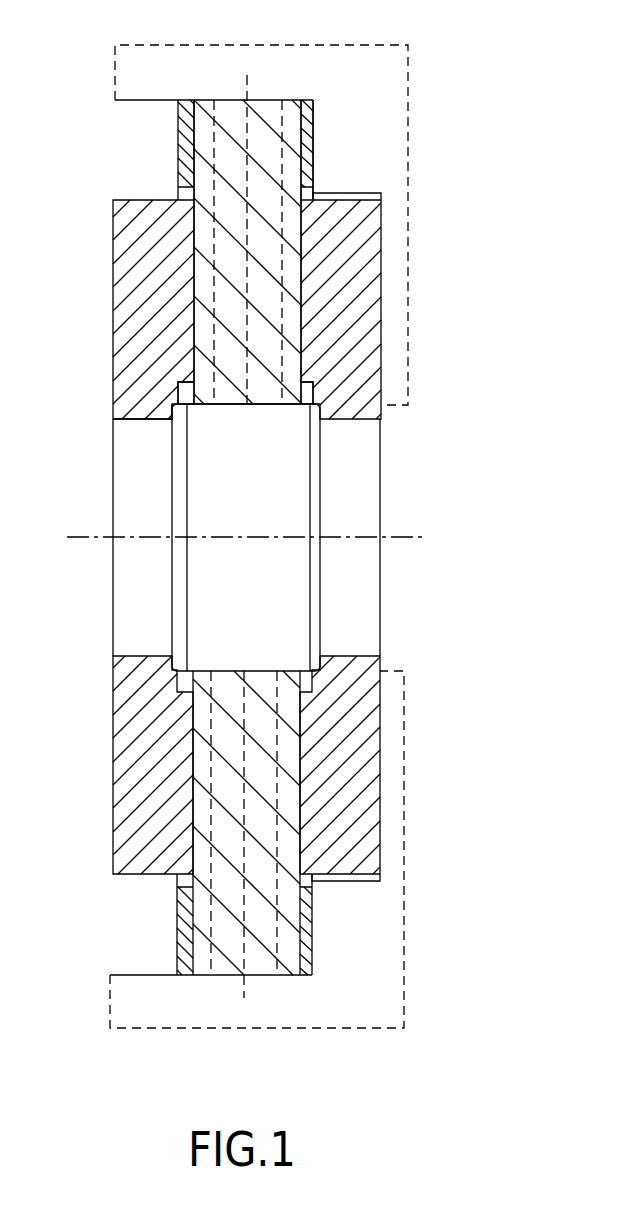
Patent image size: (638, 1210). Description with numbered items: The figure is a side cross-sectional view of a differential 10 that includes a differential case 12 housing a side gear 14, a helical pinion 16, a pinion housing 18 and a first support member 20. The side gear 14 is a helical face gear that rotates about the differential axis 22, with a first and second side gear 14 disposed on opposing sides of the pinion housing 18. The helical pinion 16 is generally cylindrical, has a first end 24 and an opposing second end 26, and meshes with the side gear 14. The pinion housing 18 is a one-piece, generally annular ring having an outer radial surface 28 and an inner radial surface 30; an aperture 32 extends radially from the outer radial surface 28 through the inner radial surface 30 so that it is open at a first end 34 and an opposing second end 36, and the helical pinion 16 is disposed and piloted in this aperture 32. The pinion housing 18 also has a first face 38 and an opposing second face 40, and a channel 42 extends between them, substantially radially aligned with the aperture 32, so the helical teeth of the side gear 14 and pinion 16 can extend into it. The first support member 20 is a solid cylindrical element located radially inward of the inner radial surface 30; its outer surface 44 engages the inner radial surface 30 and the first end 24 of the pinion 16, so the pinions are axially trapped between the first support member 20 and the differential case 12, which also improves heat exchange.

The differential 10 is at (466, 202).
The differential case 12 is at (388, 986).
The side gear 14 is at (372, 386).
The helical pinion 16 is at (222, 183).
The pinion housing 18 is at (313, 117).
The first support member 20 is at (203, 477).
The differential axis 22 is at (402, 538).
The first end 24 is at (282, 404).
The second end 26 is at (288, 100).
The outer radial surface 28 is at (186, 100).
The inner radial surface 30 is at (175, 414).
The aperture 32 is at (194, 100).
The first end of the aperture 34 is at (298, 393).
The second end of the aperture 36 is at (303, 100).
The first face 38 is at (180, 118).
The second face 40 is at (313, 154).
The channel 42 is at (280, 975).
The outer surface 44 is at (205, 402).